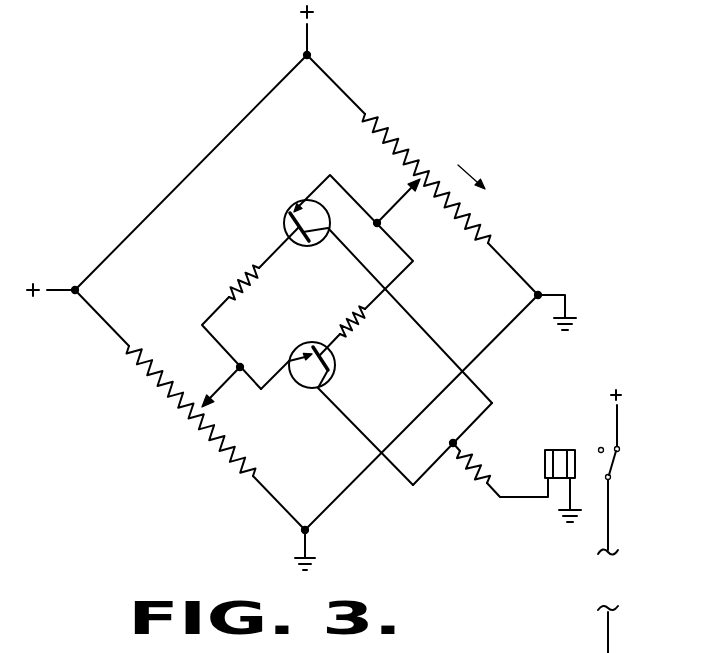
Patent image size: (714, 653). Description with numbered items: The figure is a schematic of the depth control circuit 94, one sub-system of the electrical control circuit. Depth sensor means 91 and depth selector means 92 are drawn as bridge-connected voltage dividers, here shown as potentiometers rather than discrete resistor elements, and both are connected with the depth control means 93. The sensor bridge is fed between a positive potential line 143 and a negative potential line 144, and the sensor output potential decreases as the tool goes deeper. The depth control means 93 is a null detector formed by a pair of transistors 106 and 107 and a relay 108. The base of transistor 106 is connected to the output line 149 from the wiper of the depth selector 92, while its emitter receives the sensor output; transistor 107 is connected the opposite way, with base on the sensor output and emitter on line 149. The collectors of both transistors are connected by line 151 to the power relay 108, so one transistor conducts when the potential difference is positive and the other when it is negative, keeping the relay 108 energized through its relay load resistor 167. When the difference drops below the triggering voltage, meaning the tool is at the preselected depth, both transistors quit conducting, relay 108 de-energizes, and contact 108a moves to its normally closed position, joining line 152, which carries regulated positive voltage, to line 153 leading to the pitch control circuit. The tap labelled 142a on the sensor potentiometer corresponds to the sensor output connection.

The depth sensor means 91 is at (406, 214).
The depth selector means 92 is at (184, 358).
The depth control means 93 is at (190, 362).
The depth control circuit 94 is at (451, 173).
The transistor 106 is at (287, 205).
The transistor 107 is at (313, 342).
The relay 108 is at (554, 450).
The contact 108a is at (620, 451).
The wiper connection 142a is at (395, 205).
The positive potential line 143 is at (326, 71).
The negative potential line 144 is at (526, 279).
The output line 149 is at (246, 360).
The line 151 is at (427, 328).
The line 152 is at (621, 411).
The line 153 is at (609, 524).
The relay load resistor 167 is at (481, 490).